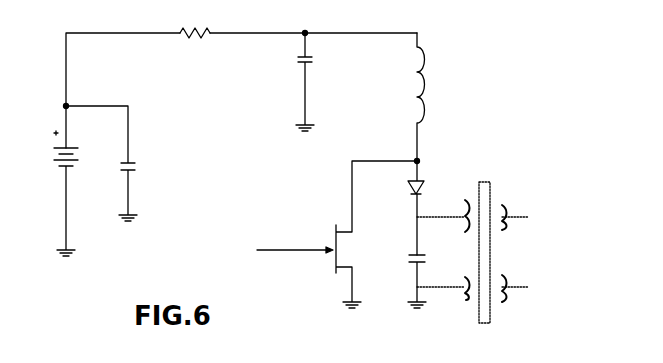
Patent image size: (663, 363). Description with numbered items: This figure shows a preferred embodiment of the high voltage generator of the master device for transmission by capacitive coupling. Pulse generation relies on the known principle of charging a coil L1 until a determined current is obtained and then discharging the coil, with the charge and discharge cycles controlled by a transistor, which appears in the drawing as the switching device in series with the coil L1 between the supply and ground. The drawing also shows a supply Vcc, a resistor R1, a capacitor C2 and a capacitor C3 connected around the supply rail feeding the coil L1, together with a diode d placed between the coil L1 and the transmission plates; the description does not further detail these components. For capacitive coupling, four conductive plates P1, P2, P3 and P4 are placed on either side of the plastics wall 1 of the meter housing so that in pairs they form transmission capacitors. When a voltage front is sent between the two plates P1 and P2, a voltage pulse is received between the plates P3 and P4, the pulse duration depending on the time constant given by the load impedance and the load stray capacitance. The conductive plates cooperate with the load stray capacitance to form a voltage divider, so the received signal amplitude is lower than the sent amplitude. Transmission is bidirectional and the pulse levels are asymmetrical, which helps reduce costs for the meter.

The resistor R1 is at (195, 22).
The capacitor C2 is at (101, 163).
The capacitor C3 is at (291, 82).
The coil L1 is at (433, 97).
The supply voltage source Vcc is at (49, 193).
The diode d is at (407, 208).
The conductive plate P1 is at (443, 214).
The conductive plate P2 is at (466, 300).
The conductive plate P3 is at (502, 212).
The conductive plate P4 is at (502, 295).
The plastics wall 1 is at (490, 313).